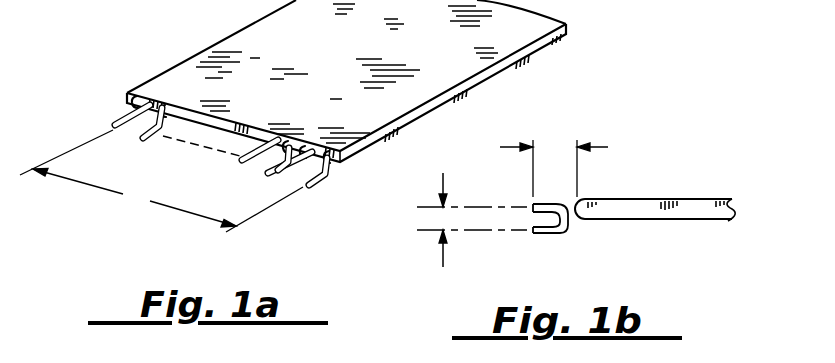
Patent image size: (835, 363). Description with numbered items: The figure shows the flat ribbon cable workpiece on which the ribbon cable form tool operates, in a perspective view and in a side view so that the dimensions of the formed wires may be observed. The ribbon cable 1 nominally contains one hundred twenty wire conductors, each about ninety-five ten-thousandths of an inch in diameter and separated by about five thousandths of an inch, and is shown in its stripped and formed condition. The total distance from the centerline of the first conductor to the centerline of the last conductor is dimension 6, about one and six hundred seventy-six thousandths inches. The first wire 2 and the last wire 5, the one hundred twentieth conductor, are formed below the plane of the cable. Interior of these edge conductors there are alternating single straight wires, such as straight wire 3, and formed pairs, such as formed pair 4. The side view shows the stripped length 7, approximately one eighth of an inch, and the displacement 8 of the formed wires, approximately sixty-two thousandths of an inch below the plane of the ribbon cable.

In FIG. 1A, the ribbon cable 1 is at (180, 80).
In FIG. 1A, the first wire 2 is at (316, 186).
In FIG. 1A, the straight wire 3 is at (307, 163).
In FIG. 1A, the formed pair 4 is at (282, 160).
In FIG. 1A, the last wire 5 is at (113, 131).
In FIG. 1A, the dimension 6 is at (161, 181).
In FIG. 1B, the stripped length 7 is at (554, 166).
In FIG. 1B, the displacement 8 is at (472, 220).